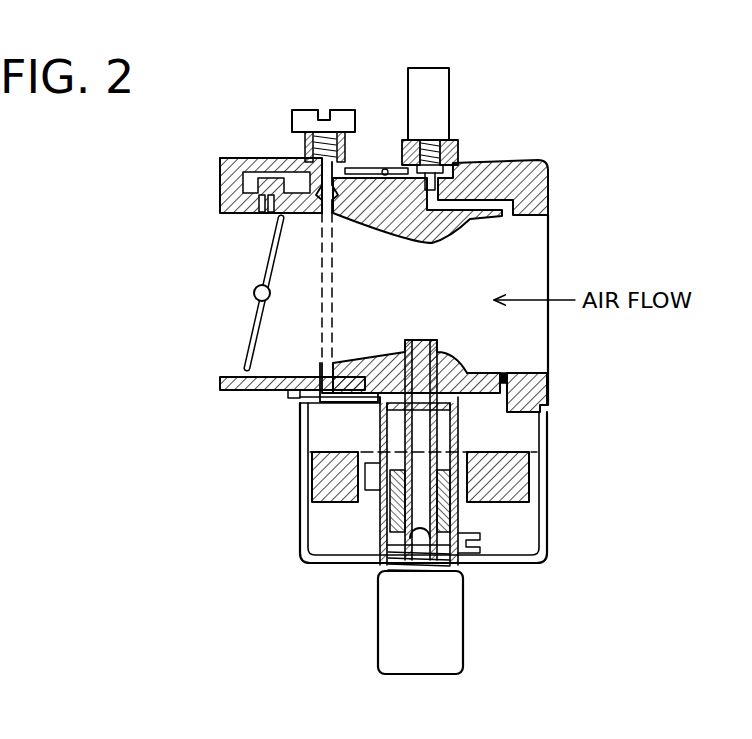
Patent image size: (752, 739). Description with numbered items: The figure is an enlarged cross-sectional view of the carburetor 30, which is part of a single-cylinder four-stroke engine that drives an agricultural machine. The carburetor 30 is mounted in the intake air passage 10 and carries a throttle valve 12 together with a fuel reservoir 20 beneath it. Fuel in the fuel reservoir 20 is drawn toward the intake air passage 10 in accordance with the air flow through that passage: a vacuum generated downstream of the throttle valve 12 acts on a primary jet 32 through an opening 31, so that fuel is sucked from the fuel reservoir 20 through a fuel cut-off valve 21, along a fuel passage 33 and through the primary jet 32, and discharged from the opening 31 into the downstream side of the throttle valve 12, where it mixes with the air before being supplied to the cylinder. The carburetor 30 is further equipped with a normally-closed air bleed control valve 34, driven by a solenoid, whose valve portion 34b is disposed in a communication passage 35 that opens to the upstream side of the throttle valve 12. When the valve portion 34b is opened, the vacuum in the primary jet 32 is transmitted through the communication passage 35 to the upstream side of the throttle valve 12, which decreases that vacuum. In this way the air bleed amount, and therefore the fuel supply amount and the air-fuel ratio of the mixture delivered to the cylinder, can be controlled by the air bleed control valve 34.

The intake air passage 10 is at (548, 374).
The throttle valve 12 is at (252, 322).
The fuel reservoir 20 is at (546, 554).
The fuel cut-off valve 21 is at (455, 629).
The carburetor 30 is at (542, 100).
The opening 31 is at (262, 212).
The primary jet 32 is at (303, 115).
The fuel passage 33 is at (330, 262).
The air bleed control valve 34 is at (437, 68).
The valve portion 34b is at (455, 142).
The communication passage 35 is at (380, 166).